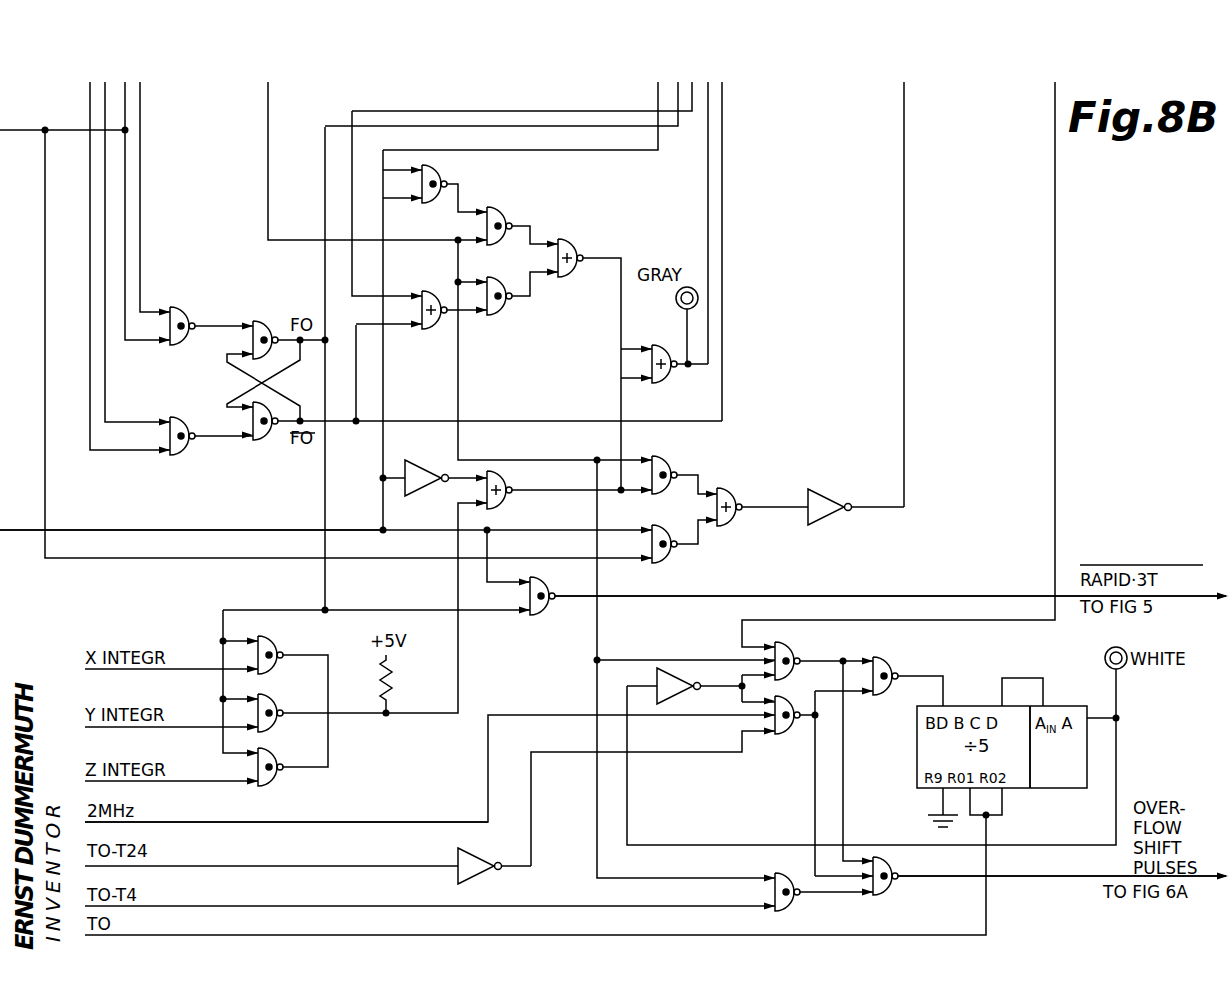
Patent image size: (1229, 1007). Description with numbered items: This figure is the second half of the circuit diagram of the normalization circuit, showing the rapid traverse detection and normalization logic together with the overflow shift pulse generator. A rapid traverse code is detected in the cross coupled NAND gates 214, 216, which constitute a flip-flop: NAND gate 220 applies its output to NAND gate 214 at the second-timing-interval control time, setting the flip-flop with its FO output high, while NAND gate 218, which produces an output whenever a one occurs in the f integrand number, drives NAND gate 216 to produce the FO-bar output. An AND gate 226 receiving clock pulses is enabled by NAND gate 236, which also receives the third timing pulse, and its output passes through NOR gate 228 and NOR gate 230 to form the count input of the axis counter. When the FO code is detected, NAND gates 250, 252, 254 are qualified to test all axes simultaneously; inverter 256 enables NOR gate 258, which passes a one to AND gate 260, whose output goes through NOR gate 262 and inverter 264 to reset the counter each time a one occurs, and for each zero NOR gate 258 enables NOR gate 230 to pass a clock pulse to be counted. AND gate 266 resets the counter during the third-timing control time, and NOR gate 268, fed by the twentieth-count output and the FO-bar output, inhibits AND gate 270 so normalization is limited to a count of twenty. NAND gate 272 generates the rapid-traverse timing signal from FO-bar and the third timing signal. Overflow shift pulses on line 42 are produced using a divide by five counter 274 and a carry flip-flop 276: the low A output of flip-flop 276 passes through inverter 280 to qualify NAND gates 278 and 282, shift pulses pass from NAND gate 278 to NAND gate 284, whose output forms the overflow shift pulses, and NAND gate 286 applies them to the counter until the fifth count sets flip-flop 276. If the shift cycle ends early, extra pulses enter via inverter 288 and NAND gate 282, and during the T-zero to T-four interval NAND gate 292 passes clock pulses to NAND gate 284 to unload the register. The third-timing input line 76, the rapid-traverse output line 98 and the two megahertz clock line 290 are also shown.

The overflow shift pulse line 42 is at (1039, 877).
The signal line 76 is at (20, 531).
The RAPID 3T output line to FIG 5 98 is at (975, 594).
The NAND gate 214 is at (262, 321).
The NAND gate 216 is at (270, 440).
The NAND gate 218 is at (179, 417).
The NAND gate 220 is at (180, 307).
The AND gate 226 is at (497, 209).
The NOR gate 228 is at (568, 241).
The NOR gate 230 is at (666, 330).
The NAND gate 236 is at (434, 166).
The NAND gate 250 is at (274, 640).
The NAND gate 252 is at (272, 698).
The NAND gate 254 is at (272, 752).
The inverter 256 is at (412, 462).
The NOR gate 258 is at (505, 475).
The AND gate 260 is at (662, 461).
The NOR gate 262 is at (742, 490).
The inverter 264 is at (823, 491).
The AND gate 266 is at (662, 528).
The NOR gate 268 is at (436, 291).
The AND gate 270 is at (495, 278).
The NAND gate 272 is at (537, 578).
The divide by five counter 274 is at (974, 704).
The carry flip-flop 276 is at (1043, 789).
The NAND gate 278 is at (786, 643).
The inverter 280 is at (672, 676).
The NAND gate 282 is at (794, 732).
The NAND gate 284 is at (885, 862).
The NAND gate 286 is at (880, 658).
The inverter 288 is at (465, 848).
The 2 MHz clock line 290 is at (303, 822).
The NAND gate 292 is at (782, 874).